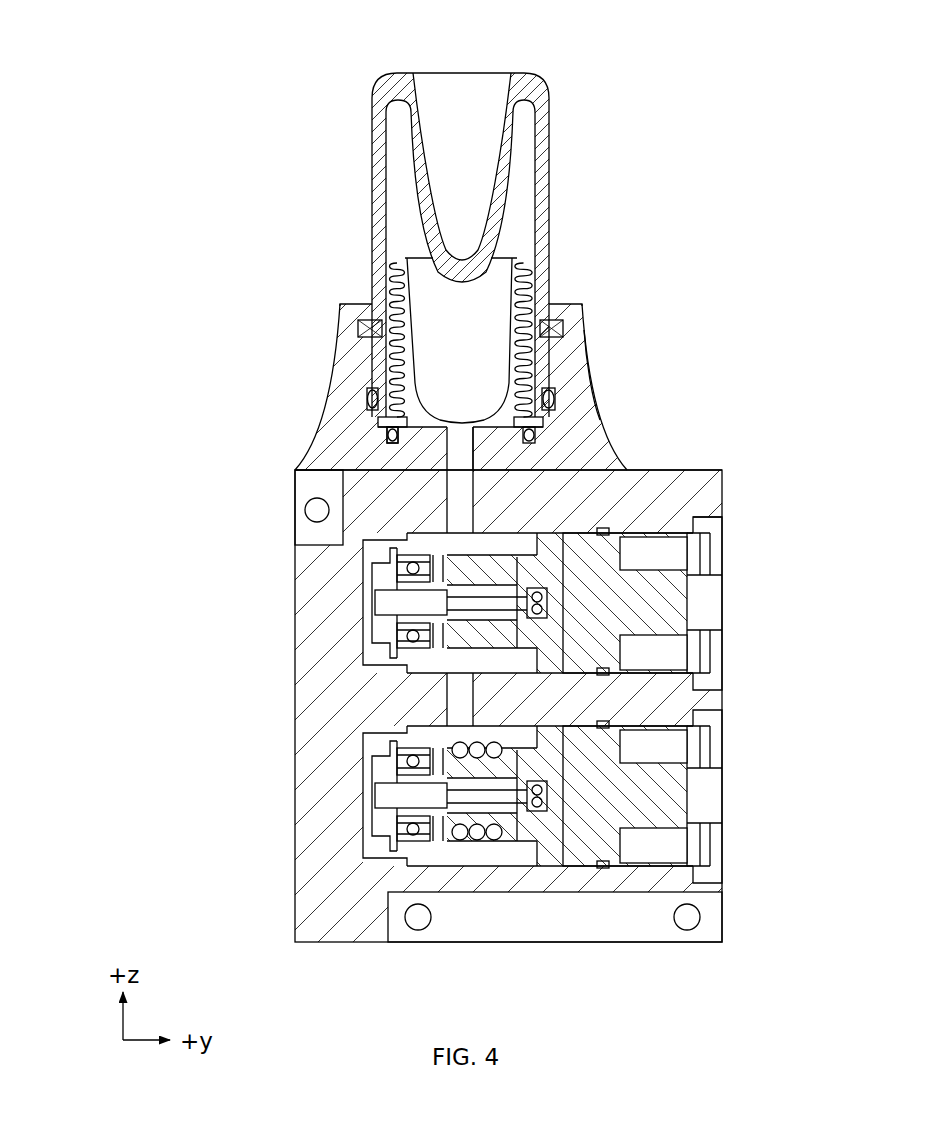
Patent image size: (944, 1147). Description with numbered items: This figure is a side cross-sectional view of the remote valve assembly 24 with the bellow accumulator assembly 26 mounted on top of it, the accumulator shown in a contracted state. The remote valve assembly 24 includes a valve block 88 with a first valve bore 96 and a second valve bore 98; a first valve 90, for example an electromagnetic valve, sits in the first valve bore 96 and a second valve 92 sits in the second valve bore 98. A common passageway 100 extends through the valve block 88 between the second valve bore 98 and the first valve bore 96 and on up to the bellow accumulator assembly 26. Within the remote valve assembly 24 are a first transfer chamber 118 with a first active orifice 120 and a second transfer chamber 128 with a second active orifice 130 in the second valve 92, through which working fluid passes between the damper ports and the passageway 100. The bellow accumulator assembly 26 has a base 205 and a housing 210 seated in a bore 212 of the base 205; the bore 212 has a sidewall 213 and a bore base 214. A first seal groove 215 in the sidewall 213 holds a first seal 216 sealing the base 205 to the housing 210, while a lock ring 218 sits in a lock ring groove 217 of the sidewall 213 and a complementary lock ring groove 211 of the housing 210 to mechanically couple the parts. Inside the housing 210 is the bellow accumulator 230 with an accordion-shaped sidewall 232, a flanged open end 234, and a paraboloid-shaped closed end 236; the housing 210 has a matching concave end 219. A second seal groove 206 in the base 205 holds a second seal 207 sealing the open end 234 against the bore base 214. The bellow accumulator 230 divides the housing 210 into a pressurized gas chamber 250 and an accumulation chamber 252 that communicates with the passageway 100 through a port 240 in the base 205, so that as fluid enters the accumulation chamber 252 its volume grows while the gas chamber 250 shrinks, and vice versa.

The remote valve assembly 24 is at (450, 690).
The bellow accumulator assembly 26 is at (435, 269).
The valve block 88 is at (300, 922).
The first valve 90 is at (672, 557).
The second valve 92 is at (676, 751).
The first valve bore 96 is at (717, 683).
The second valve bore 98 is at (710, 712).
The passageway 100 is at (463, 498).
The first transfer chamber 118 is at (375, 553).
The first active orifice 120 is at (385, 602).
The second transfer chamber 128 is at (375, 845).
The second active orifice 130 is at (385, 796).
The base 205 is at (435, 399).
The second seal groove 206 is at (390, 445).
The second seal 207 is at (390, 440).
The housing 210 is at (391, 228).
The lock ring groove 211 is at (582, 308).
The bore 212 is at (552, 357).
The sidewall 213 is at (548, 400).
The bore base 214 is at (488, 432).
The first seal groove 215 is at (362, 375).
The first seal 216 is at (368, 400).
The lock ring groove 217 is at (565, 329).
The lock ring 218 is at (370, 326).
The complimentary shaped end 219 is at (425, 180).
The bellow accumulator 230 is at (516, 252).
The sidewall 232 is at (532, 300).
The open end 234 is at (533, 424).
The closed end 236 is at (418, 358).
The port 240 is at (462, 452).
The pressurized gas chamber 250 is at (400, 216).
The accumulation chamber 252 is at (415, 410).